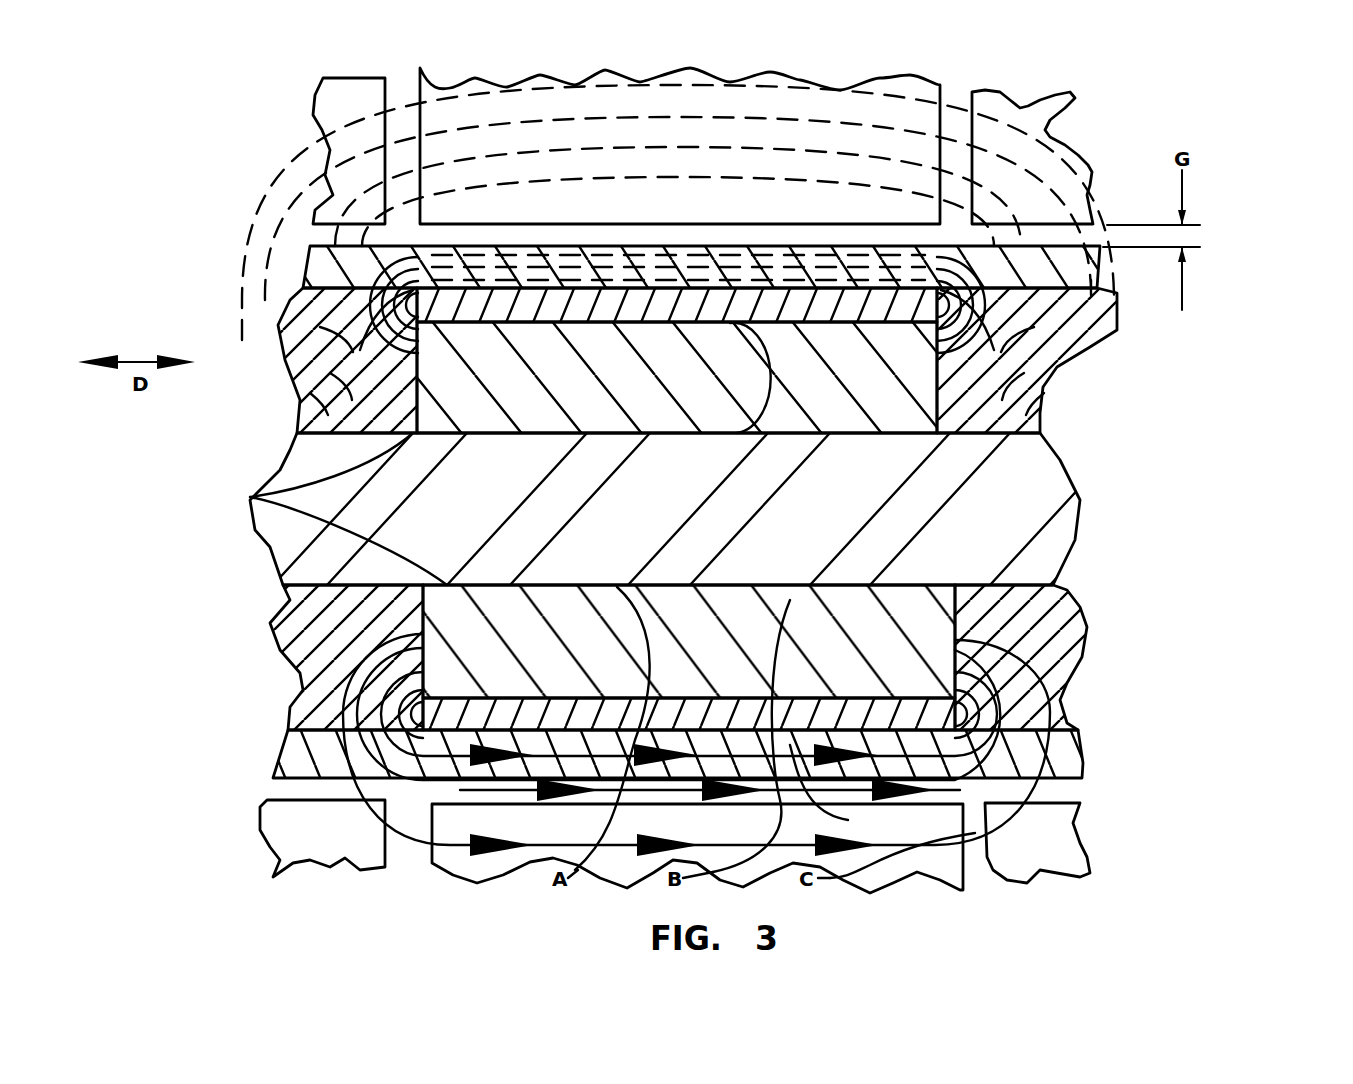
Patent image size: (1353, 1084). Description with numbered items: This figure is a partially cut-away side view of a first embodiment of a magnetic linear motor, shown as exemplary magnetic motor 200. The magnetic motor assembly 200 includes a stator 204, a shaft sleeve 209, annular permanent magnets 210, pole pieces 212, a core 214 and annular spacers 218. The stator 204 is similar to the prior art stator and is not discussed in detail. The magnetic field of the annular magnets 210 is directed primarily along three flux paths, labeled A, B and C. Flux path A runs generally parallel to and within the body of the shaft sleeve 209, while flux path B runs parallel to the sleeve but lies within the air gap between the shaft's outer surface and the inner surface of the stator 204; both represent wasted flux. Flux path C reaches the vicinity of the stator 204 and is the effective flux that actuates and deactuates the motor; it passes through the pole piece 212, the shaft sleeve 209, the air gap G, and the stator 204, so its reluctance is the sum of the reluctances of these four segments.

The magnetic motor 200 is at (1283, 171).
The stator 204 is at (1122, 152).
The sleeve 209 is at (307, 258).
The annular permanent magnets 210 is at (252, 497).
The pole pieces 212 is at (330, 400).
The core 214 is at (1025, 517).
The annular spacers 218 is at (767, 277).